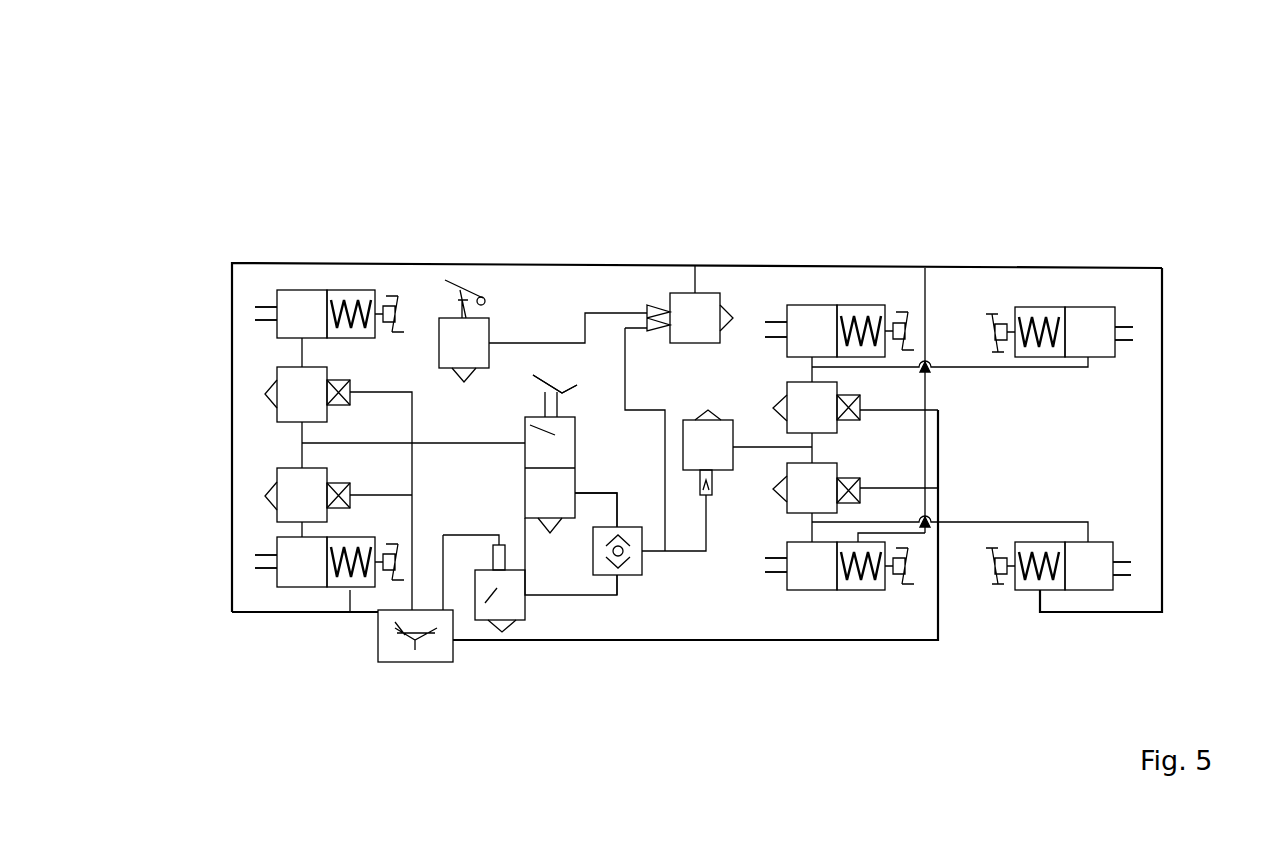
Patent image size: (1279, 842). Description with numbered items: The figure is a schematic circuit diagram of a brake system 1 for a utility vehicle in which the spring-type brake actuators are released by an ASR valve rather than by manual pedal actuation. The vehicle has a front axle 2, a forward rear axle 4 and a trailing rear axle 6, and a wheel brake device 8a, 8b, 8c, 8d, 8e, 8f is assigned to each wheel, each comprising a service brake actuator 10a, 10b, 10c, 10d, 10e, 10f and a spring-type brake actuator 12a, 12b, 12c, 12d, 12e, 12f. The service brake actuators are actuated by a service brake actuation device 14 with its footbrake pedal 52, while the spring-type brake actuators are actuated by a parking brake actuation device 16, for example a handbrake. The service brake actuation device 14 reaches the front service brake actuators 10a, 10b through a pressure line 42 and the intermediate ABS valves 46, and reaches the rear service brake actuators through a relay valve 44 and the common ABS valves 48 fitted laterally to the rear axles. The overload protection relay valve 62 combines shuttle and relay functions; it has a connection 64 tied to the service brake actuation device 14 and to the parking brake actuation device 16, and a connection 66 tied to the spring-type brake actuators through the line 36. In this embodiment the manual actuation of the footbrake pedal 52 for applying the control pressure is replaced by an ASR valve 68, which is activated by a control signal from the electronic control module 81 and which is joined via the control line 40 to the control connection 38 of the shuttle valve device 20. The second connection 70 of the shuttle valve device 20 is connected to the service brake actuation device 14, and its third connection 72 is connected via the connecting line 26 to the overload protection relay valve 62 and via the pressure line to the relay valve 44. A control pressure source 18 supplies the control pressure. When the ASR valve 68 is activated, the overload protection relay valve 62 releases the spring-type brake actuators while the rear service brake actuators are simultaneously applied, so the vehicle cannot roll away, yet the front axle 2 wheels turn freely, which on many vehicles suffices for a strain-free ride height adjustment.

The brake system 1 is at (172, 157).
The front axle 2 is at (312, 658).
The rear axle 4 is at (882, 665).
The rear axle 6 is at (1067, 665).
The wheel brake device 8a is at (268, 296).
The wheel brake device 8b is at (268, 549).
The wheel brake device 8c is at (840, 304).
The wheel brake device 8d is at (845, 594).
The wheel brake device 8e is at (1120, 315).
The wheel brake device 8f is at (1120, 550).
The service brake actuator 10a is at (290, 300).
The service brake actuator 10b is at (290, 585).
The service brake actuator 10c is at (815, 320).
The service brake actuator 10d is at (810, 590).
The service brake actuator 10e is at (1093, 320).
The service brake actuator 10f is at (1093, 590).
The spring-type brake actuator 12a is at (356, 305).
The spring-type brake actuator 12b is at (360, 590).
The spring-type brake actuator 12c is at (860, 320).
The spring-type brake actuator 12d is at (878, 590).
The spring-type brake actuator 12e is at (1030, 320).
The spring-type brake actuator 12f is at (1020, 590).
The service brake actuation device 14 is at (540, 428).
The parking brake actuation device 16 is at (470, 340).
The control pressure source 18 is at (490, 603).
The shuttle valve device 20 is at (593, 550).
The connecting line 26 is at (553, 340).
The line 36 is at (433, 263).
The control connection 38 is at (618, 576).
The control line 40 is at (626, 382).
The pressure line 42 is at (460, 447).
The relay valve 44 is at (726, 470).
The ABS valve 46 is at (270, 393).
The ABS valve 48 is at (862, 408).
The footbrake pedal 52 is at (542, 383).
The overload protection relay valve 62 is at (690, 305).
The connection 64 is at (655, 312).
The connection 66 is at (698, 292).
The ASR valve 68 is at (502, 628).
The connection 70 is at (620, 527).
The connection 72 is at (652, 552).
The electronic control module (ECU) 81 is at (433, 655).